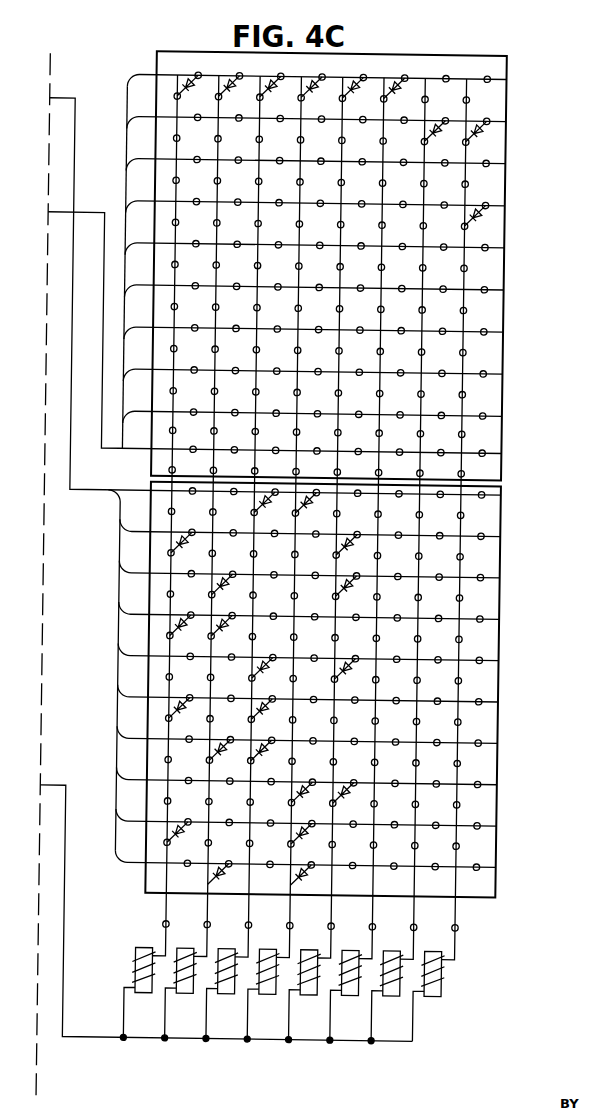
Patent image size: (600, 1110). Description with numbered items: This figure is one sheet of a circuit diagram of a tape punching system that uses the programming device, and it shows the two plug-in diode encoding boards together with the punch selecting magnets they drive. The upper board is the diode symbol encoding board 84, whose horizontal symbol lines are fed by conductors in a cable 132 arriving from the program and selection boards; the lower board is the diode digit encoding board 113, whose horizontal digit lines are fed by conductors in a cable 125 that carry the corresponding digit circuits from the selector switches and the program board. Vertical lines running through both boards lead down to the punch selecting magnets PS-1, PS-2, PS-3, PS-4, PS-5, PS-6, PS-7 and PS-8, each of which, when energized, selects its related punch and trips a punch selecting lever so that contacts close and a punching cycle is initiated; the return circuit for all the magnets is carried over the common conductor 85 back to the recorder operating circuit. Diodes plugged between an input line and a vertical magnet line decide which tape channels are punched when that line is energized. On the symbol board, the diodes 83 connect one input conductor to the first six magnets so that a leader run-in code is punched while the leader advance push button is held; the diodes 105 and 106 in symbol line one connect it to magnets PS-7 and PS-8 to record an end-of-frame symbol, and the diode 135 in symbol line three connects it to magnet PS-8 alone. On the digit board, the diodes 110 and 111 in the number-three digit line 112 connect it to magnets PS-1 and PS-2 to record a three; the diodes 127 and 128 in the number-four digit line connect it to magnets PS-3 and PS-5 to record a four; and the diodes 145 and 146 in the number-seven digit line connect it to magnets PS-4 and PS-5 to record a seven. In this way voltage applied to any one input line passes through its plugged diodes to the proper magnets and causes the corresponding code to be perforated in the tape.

The diodes 83 is at (407, 82).
The diode symbol encoding board 84 is at (507, 238).
The conductor 85 is at (75, 1037).
The diode 105 is at (450, 127).
The diode 106 is at (480, 131).
The diode 110 is at (186, 622).
The diode 111 is at (227, 622).
The No. 3 digit line 112 is at (122, 622).
The diode digit encoding board 113 is at (500, 607).
The cable 125 is at (98, 490).
The diode 127 is at (256, 674).
The diode 128 is at (338, 674).
The cable 132 is at (100, 423).
The diode 135 is at (480, 212).
The diode 145 is at (310, 792).
The diode 146 is at (353, 792).
The punch selecting magnet PS-1 is at (147, 996).
The punch selecting magnet PS-2 is at (187, 996).
The punch selecting magnet PS-3 is at (227, 996).
The punch selecting magnet PS-4 is at (266, 997).
The punch selecting magnet PS-5 is at (307, 997).
The punch selecting magnet PS-6 is at (348, 997).
The punch selecting magnet PS-7 is at (390, 997).
The punch selecting magnet PS-8 is at (432, 998).